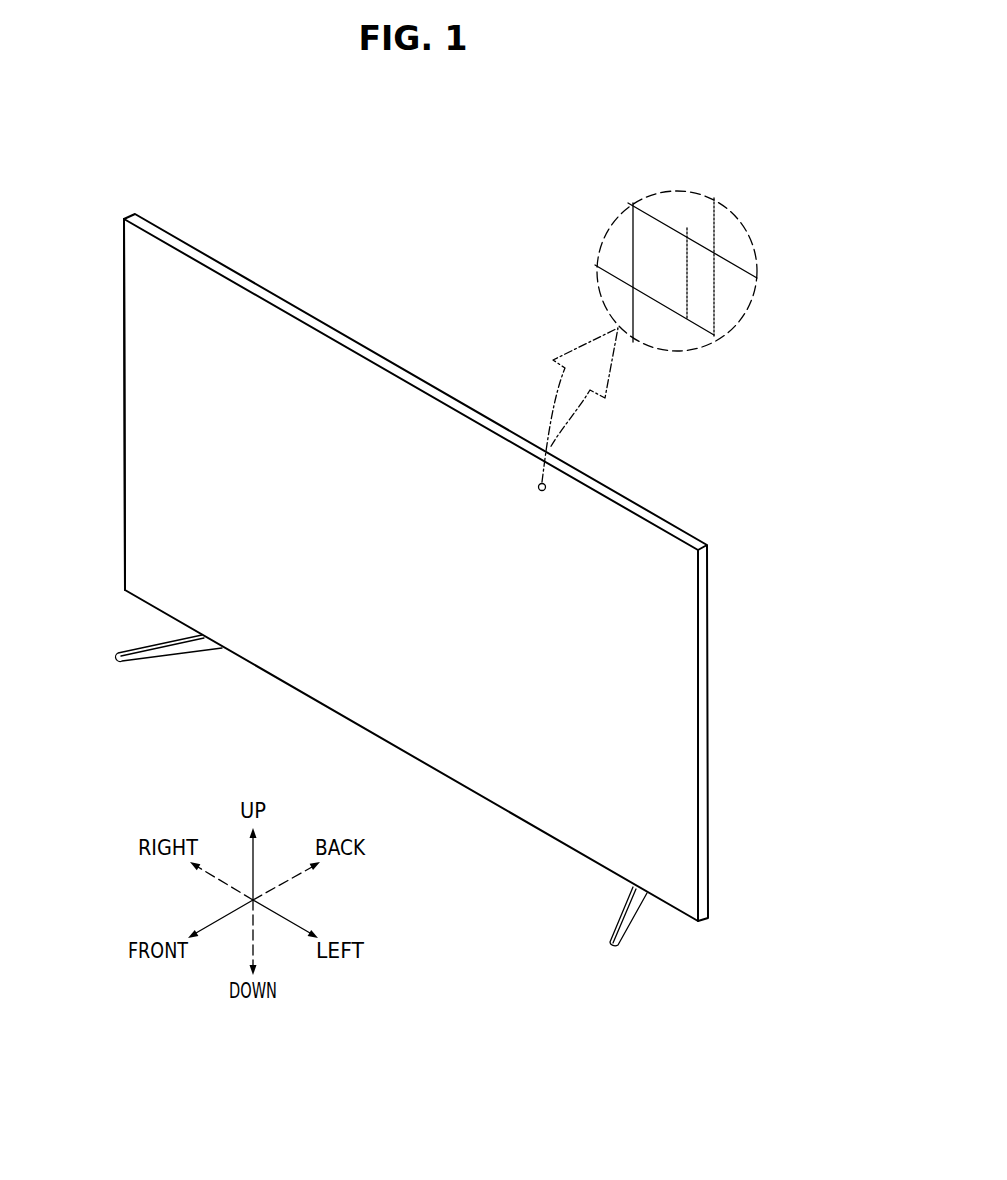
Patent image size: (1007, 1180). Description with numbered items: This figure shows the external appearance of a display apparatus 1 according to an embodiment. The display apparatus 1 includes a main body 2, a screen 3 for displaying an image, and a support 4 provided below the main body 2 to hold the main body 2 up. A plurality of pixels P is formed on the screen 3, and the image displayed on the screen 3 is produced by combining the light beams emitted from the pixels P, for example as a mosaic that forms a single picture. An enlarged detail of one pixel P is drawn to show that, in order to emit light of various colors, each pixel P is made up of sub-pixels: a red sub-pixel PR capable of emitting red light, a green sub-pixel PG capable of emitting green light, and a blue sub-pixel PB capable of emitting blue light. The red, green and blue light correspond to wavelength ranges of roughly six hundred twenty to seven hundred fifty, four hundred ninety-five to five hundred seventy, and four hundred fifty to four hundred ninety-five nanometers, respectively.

The display apparatus 1 is at (247, 185).
The main body 2 is at (358, 320).
The screen 3 is at (143, 527).
The support 4 is at (143, 657).
The pixel P is at (668, 217).
The red sub-pixel PR is at (640, 243).
The green sub-pixel PG is at (668, 290).
The blue sub-pixel PB is at (700, 313).